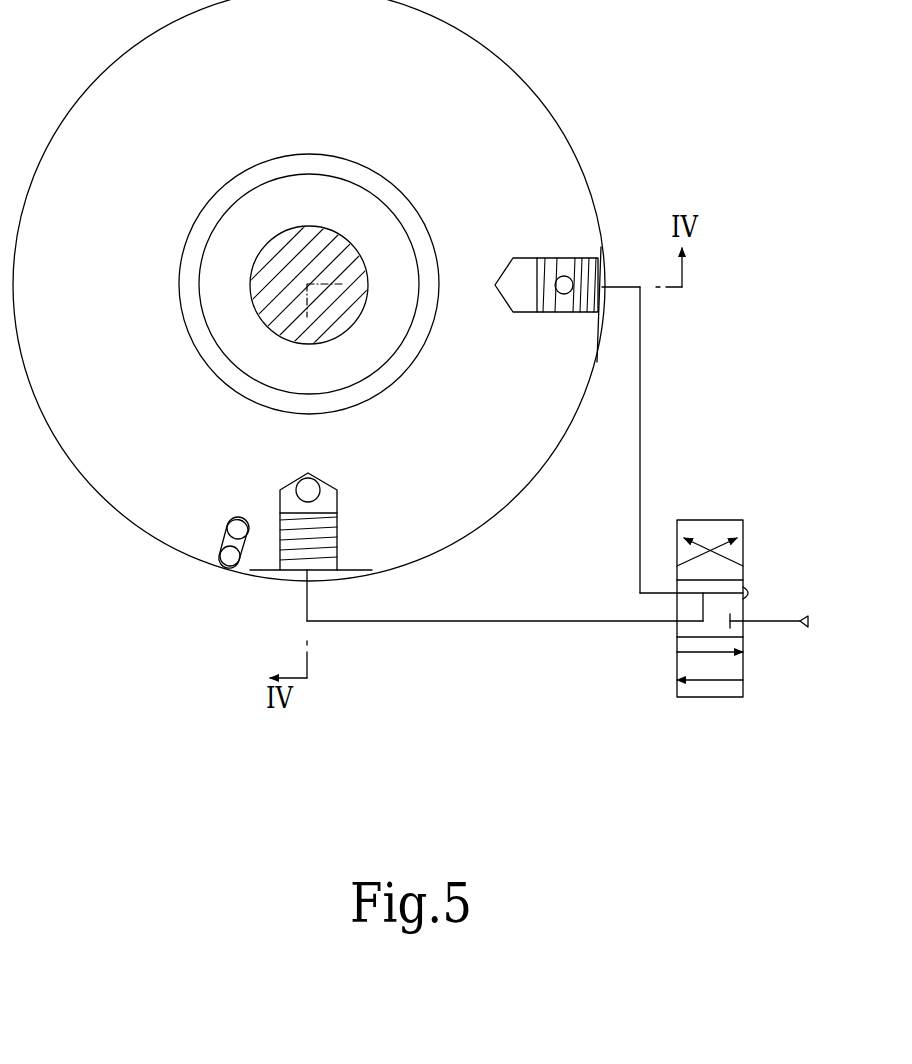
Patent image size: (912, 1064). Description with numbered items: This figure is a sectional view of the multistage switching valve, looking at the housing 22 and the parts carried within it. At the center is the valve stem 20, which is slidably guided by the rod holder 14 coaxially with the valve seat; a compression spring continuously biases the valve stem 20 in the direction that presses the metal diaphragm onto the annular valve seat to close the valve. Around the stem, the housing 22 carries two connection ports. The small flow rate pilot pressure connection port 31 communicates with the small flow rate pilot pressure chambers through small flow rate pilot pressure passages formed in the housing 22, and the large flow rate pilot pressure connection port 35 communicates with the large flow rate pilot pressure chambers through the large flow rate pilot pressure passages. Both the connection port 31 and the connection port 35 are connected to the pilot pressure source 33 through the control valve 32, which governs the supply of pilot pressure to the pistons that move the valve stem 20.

The rod holder 14 is at (413, 220).
The valve stem 20 is at (270, 300).
The housing 22 is at (572, 205).
The small flow rate pilot pressure connection port 31 is at (328, 558).
The control valve 32 is at (677, 647).
The pilot pressure source 33 is at (798, 628).
The large flow rate pilot pressure connection port 35 is at (577, 260).